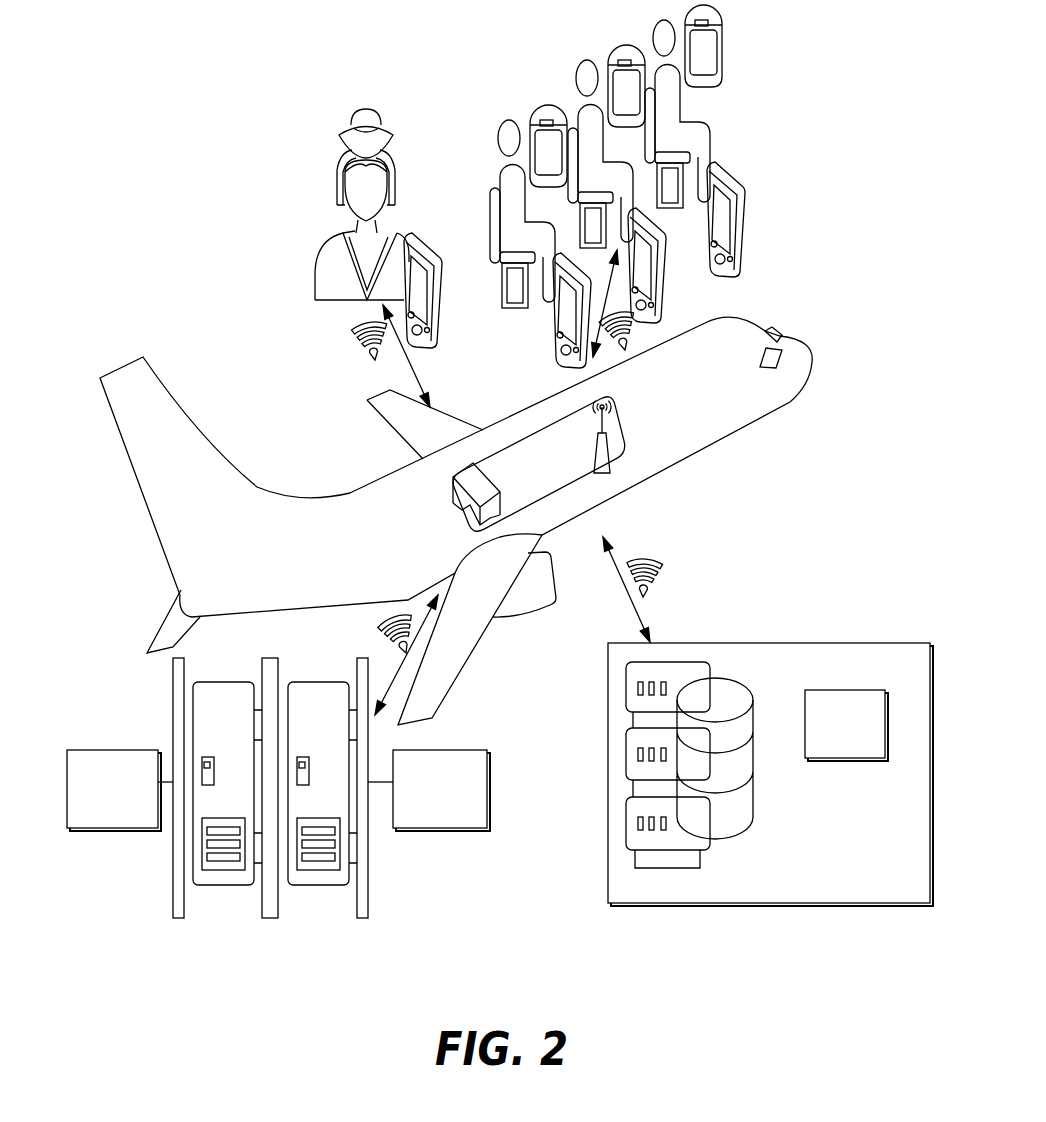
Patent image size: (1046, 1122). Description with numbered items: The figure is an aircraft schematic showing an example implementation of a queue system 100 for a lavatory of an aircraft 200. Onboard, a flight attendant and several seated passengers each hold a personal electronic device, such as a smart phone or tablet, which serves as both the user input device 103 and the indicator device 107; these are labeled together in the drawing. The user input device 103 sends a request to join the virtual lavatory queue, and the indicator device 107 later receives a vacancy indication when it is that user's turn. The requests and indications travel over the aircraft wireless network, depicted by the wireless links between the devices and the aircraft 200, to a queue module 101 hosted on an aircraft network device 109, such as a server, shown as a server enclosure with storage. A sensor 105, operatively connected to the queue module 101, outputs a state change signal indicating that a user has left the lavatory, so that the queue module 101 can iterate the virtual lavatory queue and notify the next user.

The queue system 100 is at (773, 518).
The queue module 101 is at (827, 737).
The user input device 103 is at (607, 195).
The sensor 105 is at (92, 803).
The indicator device 107 is at (438, 300).
The aircraft network device 109 is at (770, 774).
The aircraft 200 is at (807, 378).